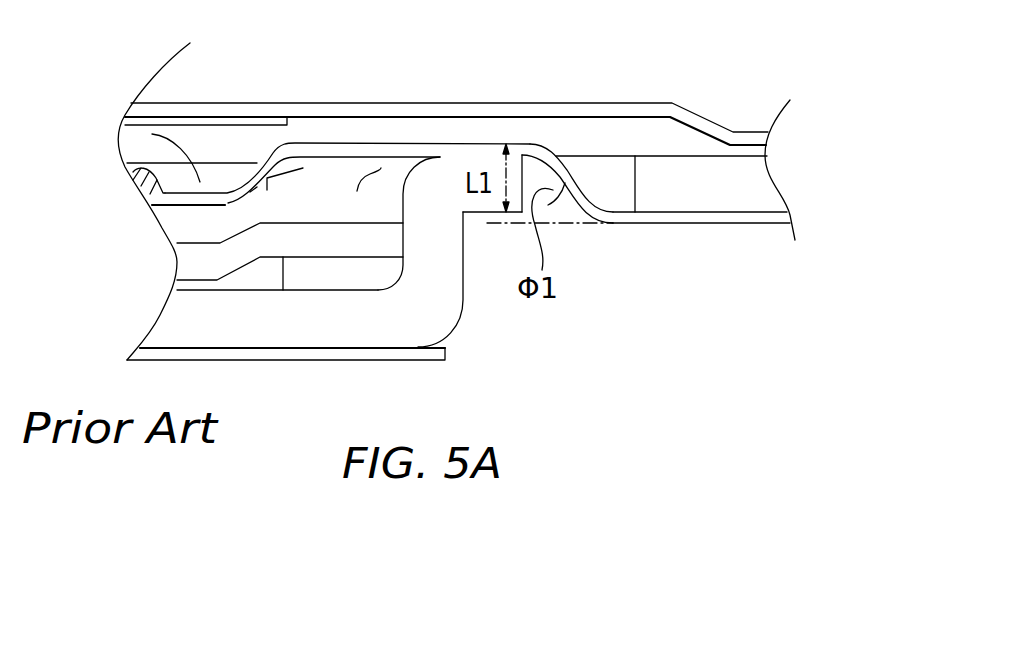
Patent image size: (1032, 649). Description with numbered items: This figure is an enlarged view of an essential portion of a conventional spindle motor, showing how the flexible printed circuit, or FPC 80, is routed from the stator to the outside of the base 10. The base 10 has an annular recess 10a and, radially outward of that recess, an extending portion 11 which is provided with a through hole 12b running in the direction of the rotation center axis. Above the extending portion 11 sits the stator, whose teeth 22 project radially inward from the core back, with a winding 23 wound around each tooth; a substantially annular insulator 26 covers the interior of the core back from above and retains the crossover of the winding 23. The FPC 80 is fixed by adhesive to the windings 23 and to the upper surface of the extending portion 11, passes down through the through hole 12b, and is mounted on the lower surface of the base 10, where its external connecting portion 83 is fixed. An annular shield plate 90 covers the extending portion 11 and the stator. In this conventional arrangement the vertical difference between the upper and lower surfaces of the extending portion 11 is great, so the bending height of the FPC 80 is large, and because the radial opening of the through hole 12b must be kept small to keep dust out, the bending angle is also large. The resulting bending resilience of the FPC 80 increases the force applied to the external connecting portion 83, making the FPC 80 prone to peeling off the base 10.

The base 10 is at (218, 313).
The annular recess 10a is at (448, 282).
The extending portion 11 is at (717, 188).
The through hole 12b is at (608, 187).
The teeth 22 is at (190, 226).
The winding 23 is at (143, 133).
The insulator 26 is at (321, 178).
The FPC 80 is at (362, 152).
The external connecting portion 83 is at (742, 218).
The shield plate 90 is at (593, 104).